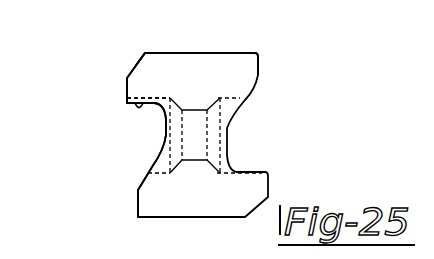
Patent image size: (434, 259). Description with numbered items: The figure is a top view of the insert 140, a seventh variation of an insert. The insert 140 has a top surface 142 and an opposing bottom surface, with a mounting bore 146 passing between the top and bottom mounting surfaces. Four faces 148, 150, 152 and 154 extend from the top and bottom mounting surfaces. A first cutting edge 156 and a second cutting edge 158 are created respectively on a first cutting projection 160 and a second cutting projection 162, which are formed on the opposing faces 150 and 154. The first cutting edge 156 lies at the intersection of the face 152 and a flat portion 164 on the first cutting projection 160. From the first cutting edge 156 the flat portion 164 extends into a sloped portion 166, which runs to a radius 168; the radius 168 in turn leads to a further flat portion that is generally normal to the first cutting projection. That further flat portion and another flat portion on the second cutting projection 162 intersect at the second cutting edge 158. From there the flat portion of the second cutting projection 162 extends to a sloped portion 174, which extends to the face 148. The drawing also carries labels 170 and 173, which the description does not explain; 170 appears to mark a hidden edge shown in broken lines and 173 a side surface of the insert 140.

The insert 140 is at (275, 78).
The top surface 142 is at (207, 80).
The mounting bore 146 is at (230, 122).
The face 148 is at (248, 53).
The face 150 is at (307, 124).
The face 152 is at (192, 218).
The face 154 is at (103, 130).
The first cutting edge 156 is at (138, 217).
The second cutting edge 158 is at (125, 103).
The first cutting projection 160 is at (138, 204).
The second cutting projection 162 is at (123, 82).
The flat portion 164 is at (138, 190).
The sloped portion 166 is at (146, 177).
The radius 168 is at (158, 112).
The hidden edge 170 is at (145, 100).
The left vertical surface 173 is at (125, 92).
The sloped portion 174 is at (145, 53).